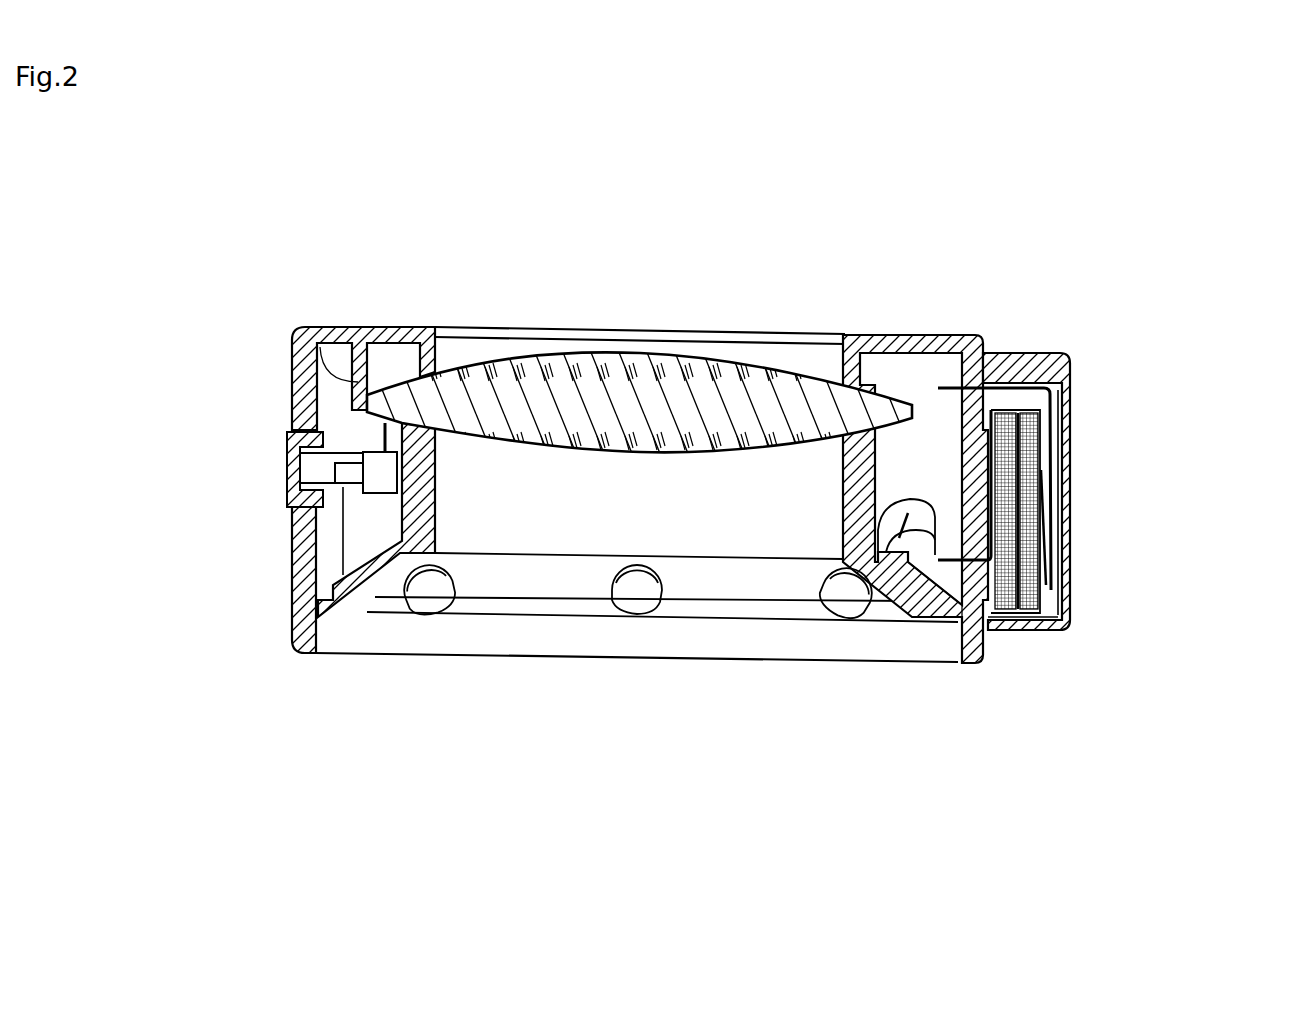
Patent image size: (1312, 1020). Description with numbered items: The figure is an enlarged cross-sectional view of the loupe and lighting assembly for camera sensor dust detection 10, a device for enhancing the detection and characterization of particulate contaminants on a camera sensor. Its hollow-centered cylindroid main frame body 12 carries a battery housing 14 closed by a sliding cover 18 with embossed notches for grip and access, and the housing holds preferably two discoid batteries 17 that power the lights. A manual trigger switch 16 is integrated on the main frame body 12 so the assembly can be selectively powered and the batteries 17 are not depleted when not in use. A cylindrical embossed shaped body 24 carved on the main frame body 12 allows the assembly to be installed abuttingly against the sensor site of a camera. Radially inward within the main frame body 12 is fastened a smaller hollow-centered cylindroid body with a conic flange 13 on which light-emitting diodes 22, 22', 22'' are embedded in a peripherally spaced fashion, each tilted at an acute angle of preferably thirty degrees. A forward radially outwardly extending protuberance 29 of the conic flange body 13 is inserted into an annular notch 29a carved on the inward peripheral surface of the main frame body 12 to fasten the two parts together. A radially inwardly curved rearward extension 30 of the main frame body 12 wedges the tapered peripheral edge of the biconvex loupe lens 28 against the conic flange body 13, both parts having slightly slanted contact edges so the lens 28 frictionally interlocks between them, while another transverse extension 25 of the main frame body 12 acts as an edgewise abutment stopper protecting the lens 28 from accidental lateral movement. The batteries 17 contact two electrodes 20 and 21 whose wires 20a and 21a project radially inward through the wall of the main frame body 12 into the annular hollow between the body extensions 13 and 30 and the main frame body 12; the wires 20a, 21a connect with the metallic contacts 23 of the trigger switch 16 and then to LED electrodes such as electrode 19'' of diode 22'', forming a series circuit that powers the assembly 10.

The loupe and lighting assembly for camera sensor dust detection 10 is at (1058, 320).
The hollow-centered cylindroid main frame body 12 is at (300, 580).
The hollow-centered cylindroid body with a conic flange 13 is at (392, 560).
The battery housing 14 is at (1053, 347).
The manual trigger switch 16 is at (287, 468).
The batteries 17 is at (1047, 623).
The sliding cover 18 is at (1070, 498).
The electrode 20 is at (1068, 556).
The wire 20a is at (938, 386).
The electrode 21 is at (1050, 580).
The wire 21a is at (936, 563).
The light-emitting diode 22 is at (465, 658).
The light-emitting diode 22' is at (633, 670).
The light-emitting diode 22'' is at (804, 666).
The metallic contacts 23 is at (380, 438).
The cylindrical embossed shaped body 24 is at (348, 636).
The transverse extension 25 is at (333, 327).
The biconvex loupe lens 28 is at (633, 357).
The forward radially outwardly extending protuberance 29 is at (952, 580).
The annular notch 29a is at (960, 615).
The radially inwardly curved rearward extension 30 is at (893, 335).
The electrode 19'' is at (896, 643).